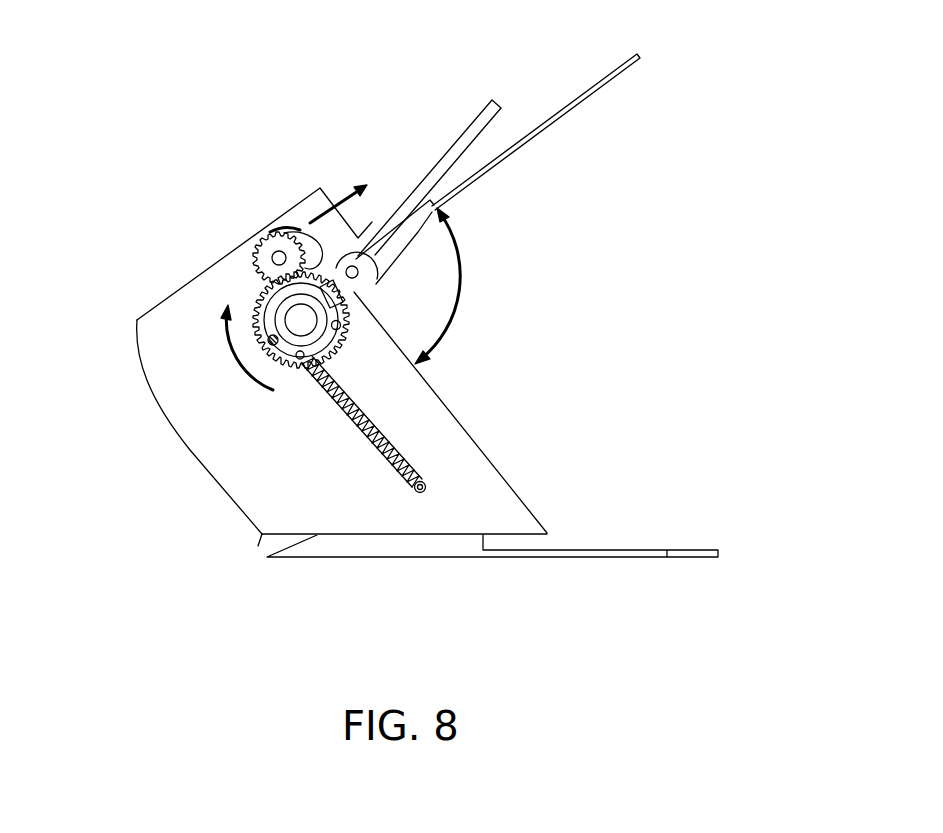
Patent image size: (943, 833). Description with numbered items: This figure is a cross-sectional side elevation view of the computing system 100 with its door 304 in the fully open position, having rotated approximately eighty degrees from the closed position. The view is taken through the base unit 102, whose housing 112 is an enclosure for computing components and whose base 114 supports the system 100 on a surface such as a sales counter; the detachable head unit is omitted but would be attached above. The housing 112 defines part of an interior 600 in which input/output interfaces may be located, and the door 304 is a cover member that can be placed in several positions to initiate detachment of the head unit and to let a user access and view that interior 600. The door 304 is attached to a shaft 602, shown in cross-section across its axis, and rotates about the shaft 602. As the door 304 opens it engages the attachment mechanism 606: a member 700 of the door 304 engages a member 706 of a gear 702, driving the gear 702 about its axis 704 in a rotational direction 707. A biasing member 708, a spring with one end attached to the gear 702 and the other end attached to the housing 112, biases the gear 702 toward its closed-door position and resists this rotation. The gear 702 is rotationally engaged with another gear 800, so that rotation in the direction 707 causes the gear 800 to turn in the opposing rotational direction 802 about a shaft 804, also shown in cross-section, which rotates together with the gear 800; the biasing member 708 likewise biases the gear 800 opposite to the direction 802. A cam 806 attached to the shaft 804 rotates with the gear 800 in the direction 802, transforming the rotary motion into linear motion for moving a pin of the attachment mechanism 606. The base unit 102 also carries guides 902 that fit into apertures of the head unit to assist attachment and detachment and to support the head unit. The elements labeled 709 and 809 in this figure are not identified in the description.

The computing system 100 is at (113, 226).
The base unit 102 is at (223, 493).
The housing 112 is at (257, 540).
The base 114 is at (718, 548).
The door 304 is at (637, 56).
The interior 600 is at (244, 444).
The shaft 602 is at (378, 255).
The attachment mechanism 606 is at (186, 358).
The member 700 is at (345, 250).
The gear 702 is at (355, 355).
The axis 704 is at (302, 358).
The member 706 is at (348, 300).
The rotational direction 707 is at (237, 368).
The biasing member 708 is at (380, 450).
The spring anchor 709 is at (426, 482).
The gear 800 is at (253, 257).
The rotational direction 802 is at (277, 230).
The shaft 804 is at (279, 258).
The cam 806 is at (373, 283).
The stop notch 809 is at (357, 237).
The guides 902 is at (500, 104).